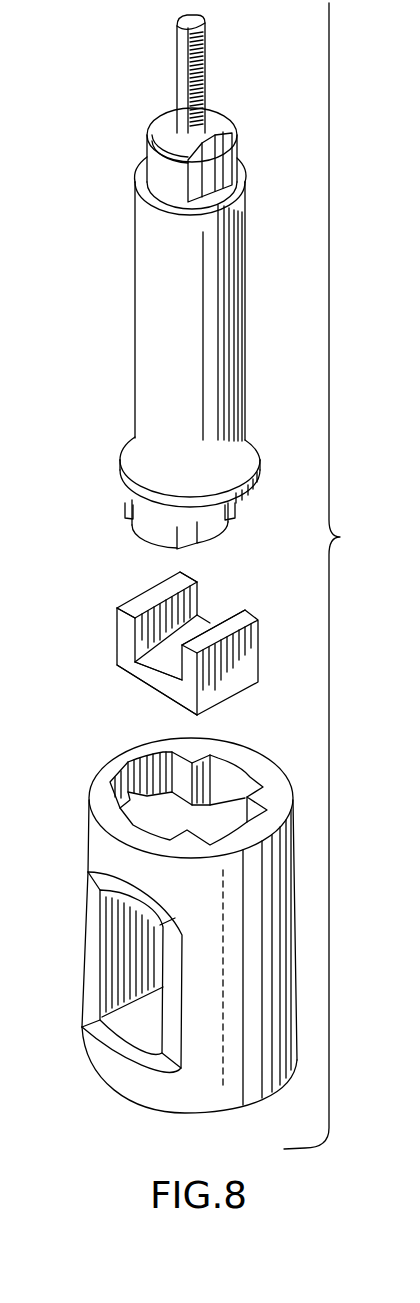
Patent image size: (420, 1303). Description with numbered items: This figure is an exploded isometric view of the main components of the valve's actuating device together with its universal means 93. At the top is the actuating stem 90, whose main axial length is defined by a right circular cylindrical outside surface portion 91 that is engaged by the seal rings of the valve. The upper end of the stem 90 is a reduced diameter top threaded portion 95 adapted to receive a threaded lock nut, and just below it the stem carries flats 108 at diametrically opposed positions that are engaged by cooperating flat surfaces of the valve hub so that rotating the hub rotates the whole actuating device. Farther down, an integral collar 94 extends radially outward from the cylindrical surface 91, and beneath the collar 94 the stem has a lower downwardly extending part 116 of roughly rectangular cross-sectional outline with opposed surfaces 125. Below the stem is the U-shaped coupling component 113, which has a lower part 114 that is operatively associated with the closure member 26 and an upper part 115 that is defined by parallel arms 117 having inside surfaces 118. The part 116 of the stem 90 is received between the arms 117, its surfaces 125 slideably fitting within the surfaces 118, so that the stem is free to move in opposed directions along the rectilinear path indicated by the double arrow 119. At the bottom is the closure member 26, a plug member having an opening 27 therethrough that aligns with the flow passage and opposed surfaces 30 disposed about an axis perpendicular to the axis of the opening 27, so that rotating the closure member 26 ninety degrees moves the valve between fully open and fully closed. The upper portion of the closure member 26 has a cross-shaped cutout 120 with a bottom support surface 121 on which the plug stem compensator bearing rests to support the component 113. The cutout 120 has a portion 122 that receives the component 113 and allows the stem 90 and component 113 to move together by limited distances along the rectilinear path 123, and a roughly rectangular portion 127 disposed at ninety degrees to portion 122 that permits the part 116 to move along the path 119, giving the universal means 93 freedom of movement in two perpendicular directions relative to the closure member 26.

The top threaded portion 95 is at (208, 60).
The flats 108 is at (160, 126).
The actuating stem 90 is at (135, 340).
The right circular cylindrical outside surface portion 91 is at (240, 345).
The collar 94 is at (258, 458).
The opposed surfaces 125 is at (234, 516).
The lower downwardly extending part 116 is at (140, 522).
The universal means 93 is at (88, 564).
The U-shaped coupling component 113 is at (113, 628).
The parallel arms 117 is at (140, 600).
The inside surfaces 118 is at (160, 655).
The lower part 114 is at (160, 682).
The upper part 115 is at (197, 577).
The double arrow 119 is at (220, 595).
The rectilinear path 123 is at (265, 659).
The opposed surfaces 30 is at (90, 808).
The cross-shaped cutout 120 is at (128, 765).
The bottom support surface 121 is at (214, 804).
The portion 122 is at (110, 776).
The roughly rectangular portion 127 is at (135, 826).
The closure member 26 is at (100, 865).
The opening 27 is at (115, 942).